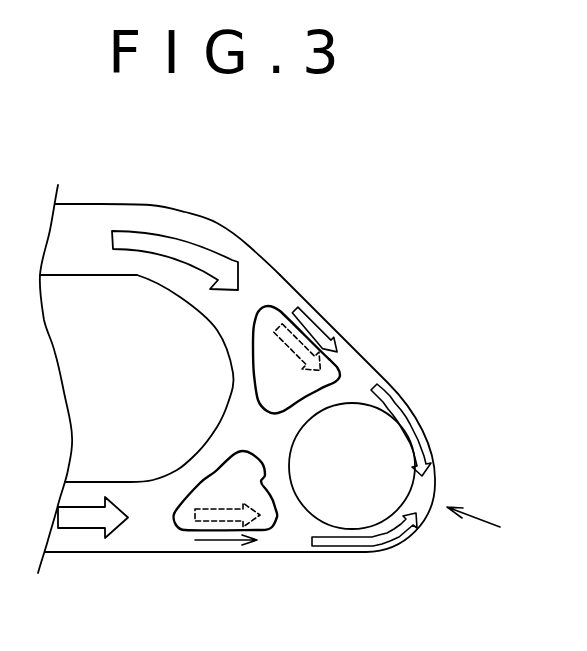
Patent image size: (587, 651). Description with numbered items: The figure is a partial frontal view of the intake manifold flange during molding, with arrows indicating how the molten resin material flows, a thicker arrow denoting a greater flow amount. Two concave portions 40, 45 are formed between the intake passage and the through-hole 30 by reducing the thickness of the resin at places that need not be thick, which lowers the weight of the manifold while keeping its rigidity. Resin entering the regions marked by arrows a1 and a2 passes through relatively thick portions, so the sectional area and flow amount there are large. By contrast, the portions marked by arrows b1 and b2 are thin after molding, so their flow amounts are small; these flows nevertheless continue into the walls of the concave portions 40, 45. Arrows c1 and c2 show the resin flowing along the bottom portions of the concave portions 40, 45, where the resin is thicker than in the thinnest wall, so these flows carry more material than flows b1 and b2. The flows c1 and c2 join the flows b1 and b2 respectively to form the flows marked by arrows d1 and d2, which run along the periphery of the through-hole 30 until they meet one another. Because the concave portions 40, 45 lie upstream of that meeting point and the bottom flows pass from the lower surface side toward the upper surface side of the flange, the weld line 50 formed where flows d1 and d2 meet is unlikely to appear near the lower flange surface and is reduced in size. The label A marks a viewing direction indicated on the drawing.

The through-hole 30 is at (358, 407).
The concave portion 40 is at (339, 376).
The concave portion 45 is at (264, 485).
The weld line 50 is at (439, 497).
The arrow a1 is at (170, 233).
The arrow a2 is at (80, 528).
The arrow b1 is at (313, 313).
The arrow b2 is at (212, 547).
The arrow c1 is at (275, 357).
The arrow c2 is at (210, 510).
The arrow d1 is at (408, 400).
The arrow d2 is at (370, 547).
The viewing direction A is at (474, 503).